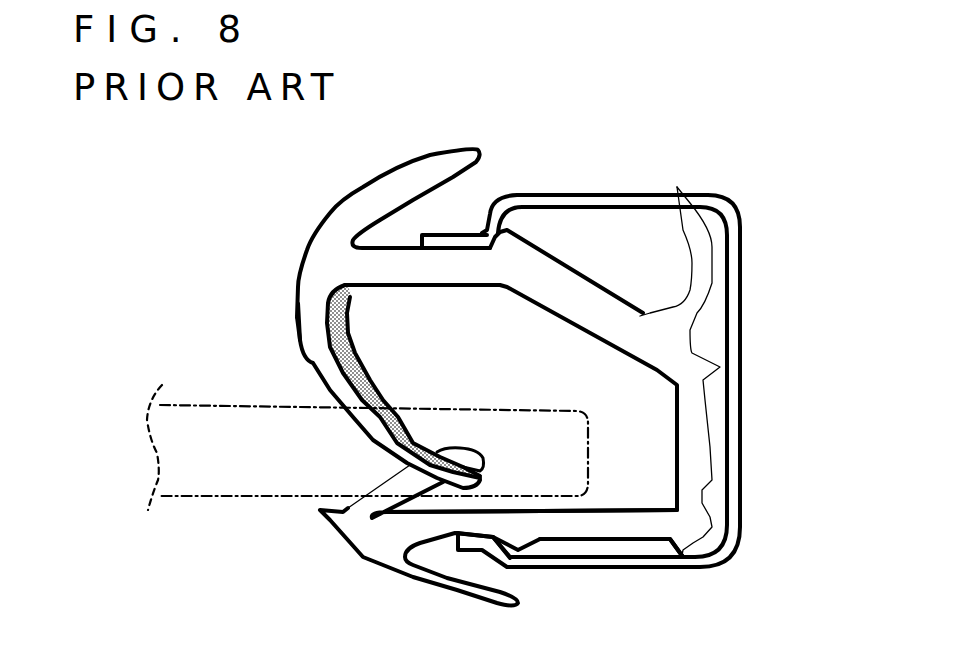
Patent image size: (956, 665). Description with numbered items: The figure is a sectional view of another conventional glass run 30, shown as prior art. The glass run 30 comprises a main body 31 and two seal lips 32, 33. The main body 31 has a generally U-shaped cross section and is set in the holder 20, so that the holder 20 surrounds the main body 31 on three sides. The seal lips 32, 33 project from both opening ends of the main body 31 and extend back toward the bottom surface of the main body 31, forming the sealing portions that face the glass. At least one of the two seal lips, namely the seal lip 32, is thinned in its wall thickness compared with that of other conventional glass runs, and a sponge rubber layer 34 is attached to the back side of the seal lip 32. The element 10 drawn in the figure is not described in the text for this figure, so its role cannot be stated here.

The panel 10 is at (229, 460).
The holder 20 is at (600, 193).
The glass run 30 is at (245, 252).
The main body 31 is at (622, 518).
The seal lip 32 is at (320, 347).
The seal lip 33 is at (470, 450).
The sponge rubber layer 34 is at (352, 347).